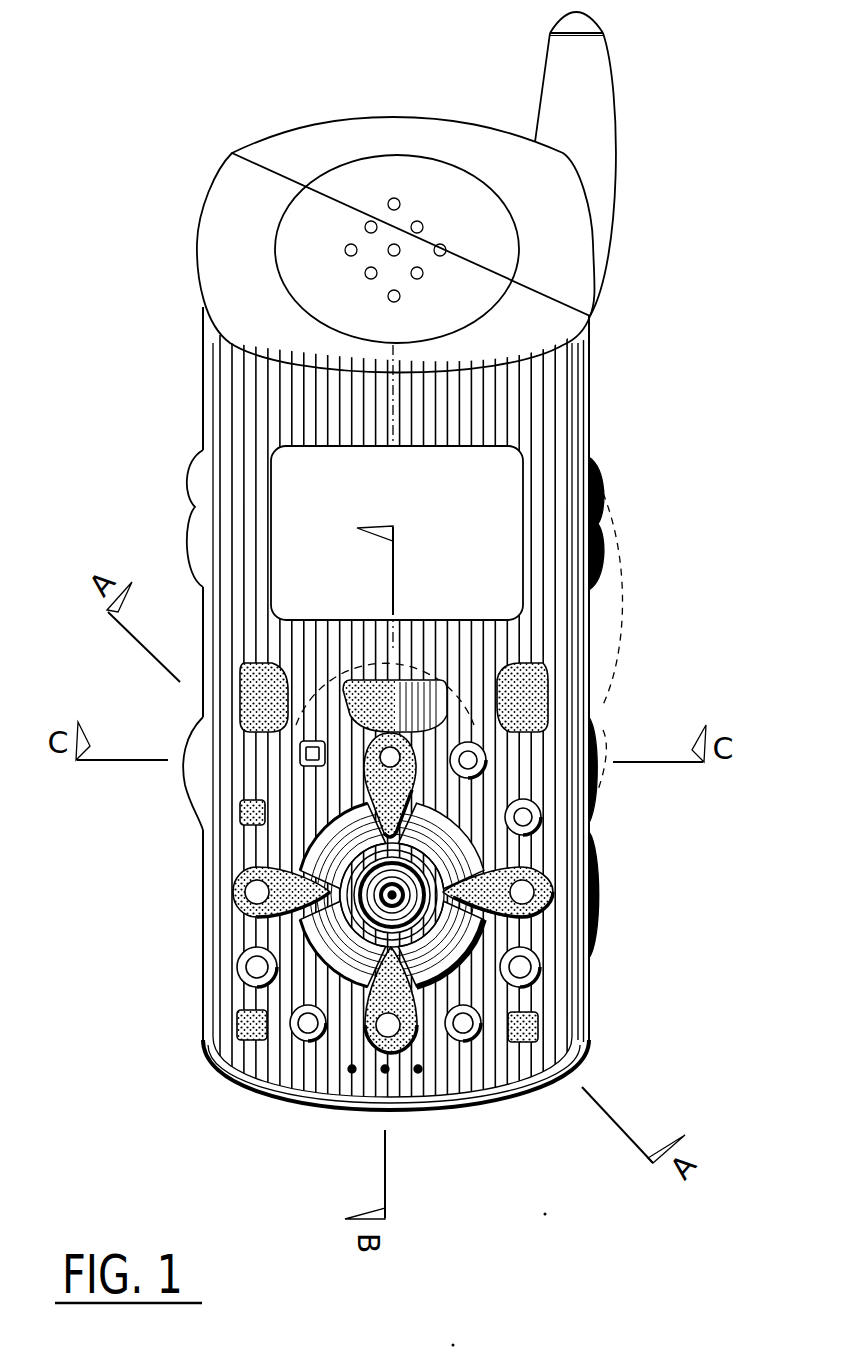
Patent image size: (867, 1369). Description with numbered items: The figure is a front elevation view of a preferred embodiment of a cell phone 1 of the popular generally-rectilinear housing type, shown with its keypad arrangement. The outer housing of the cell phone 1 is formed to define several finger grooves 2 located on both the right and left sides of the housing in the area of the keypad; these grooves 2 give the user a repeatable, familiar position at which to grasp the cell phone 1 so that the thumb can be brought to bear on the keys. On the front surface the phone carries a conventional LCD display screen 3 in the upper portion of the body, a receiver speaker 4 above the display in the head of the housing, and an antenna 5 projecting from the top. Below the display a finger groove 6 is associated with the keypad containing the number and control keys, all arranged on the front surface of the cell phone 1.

The cell phone 1 is at (605, 390).
The finger grooves 2 is at (203, 827).
The LCD display screen 3 is at (477, 512).
The receiver speaker 4 is at (483, 228).
The antenna 5 is at (580, 114).
The finger groove 6 is at (443, 672).